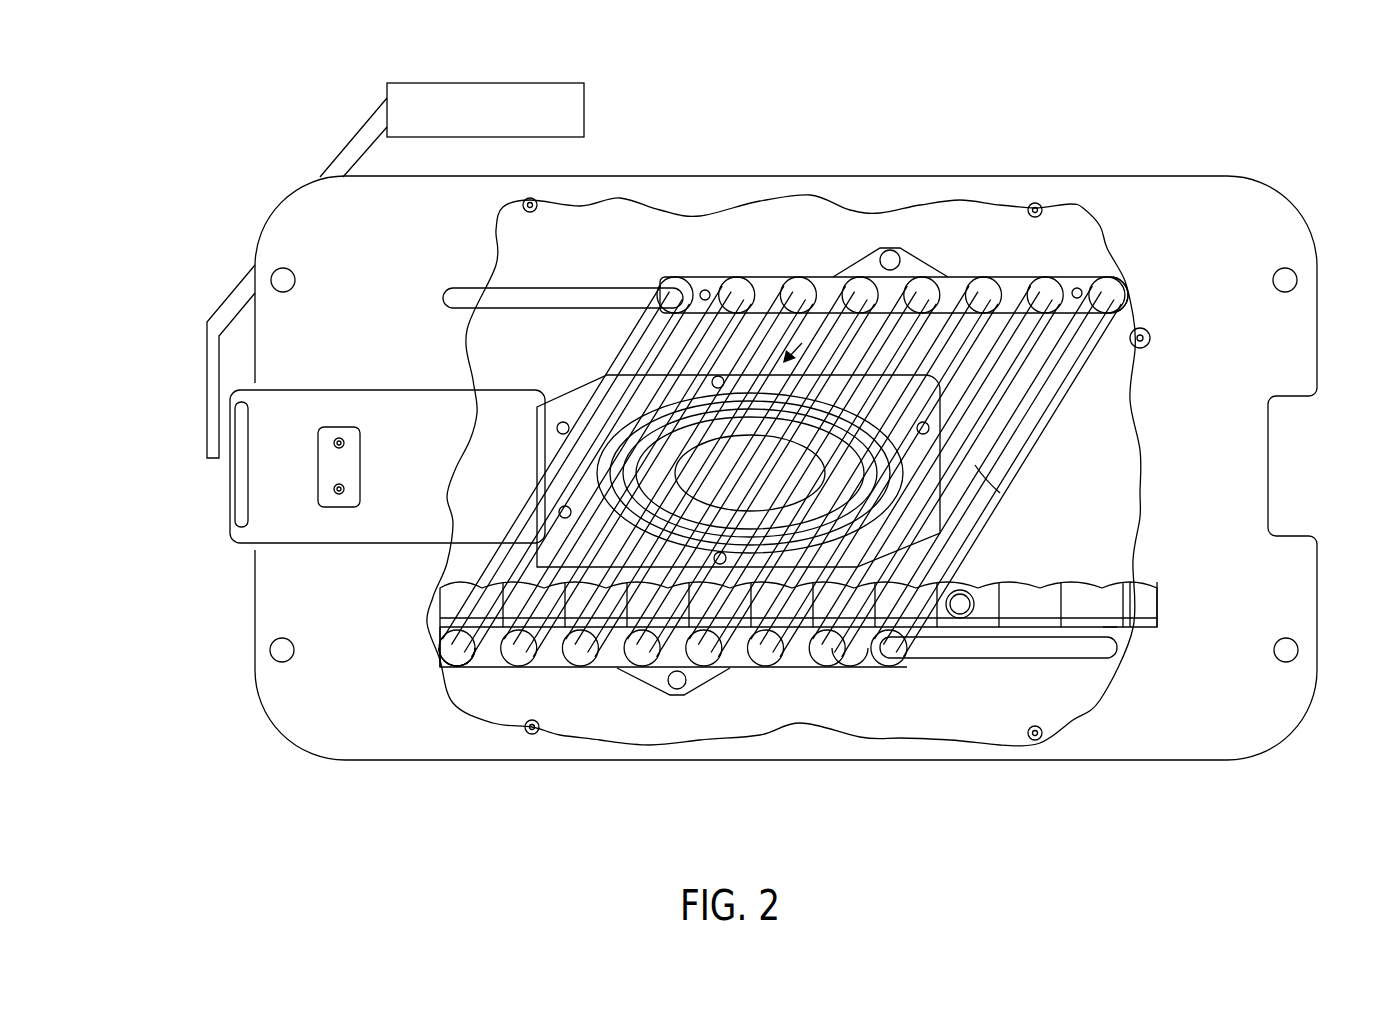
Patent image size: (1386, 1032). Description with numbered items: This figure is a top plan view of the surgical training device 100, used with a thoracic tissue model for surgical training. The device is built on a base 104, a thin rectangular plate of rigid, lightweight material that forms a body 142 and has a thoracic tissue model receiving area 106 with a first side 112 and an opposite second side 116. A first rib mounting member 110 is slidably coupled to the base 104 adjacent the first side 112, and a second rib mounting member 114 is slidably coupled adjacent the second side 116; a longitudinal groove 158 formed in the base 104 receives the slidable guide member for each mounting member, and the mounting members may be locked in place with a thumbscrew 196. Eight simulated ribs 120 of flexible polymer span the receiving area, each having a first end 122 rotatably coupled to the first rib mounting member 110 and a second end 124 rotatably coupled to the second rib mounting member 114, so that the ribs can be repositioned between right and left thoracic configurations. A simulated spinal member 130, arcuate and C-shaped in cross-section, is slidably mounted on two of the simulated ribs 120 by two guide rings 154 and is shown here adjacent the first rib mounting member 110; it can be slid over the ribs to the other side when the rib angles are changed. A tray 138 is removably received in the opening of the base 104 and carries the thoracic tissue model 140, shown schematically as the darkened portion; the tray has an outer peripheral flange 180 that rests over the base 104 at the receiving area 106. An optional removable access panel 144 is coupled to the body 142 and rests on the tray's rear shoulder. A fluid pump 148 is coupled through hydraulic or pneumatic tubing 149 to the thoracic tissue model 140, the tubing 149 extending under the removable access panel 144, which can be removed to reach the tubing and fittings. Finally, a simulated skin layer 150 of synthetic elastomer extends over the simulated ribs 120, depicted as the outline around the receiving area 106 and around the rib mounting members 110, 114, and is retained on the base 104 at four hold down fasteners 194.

The surgical training device 100 is at (968, 90).
The base 104 is at (1262, 172).
The thoracic tissue model receiving area 106 is at (1000, 493).
The first rib mounting member 110 is at (553, 650).
The first side 112 is at (1103, 632).
The second rib mounting member 114 is at (1082, 290).
The second side 116 is at (1113, 338).
The simulated ribs 120 is at (777, 317).
The first end 122 is at (447, 632).
The second end 124 is at (1113, 293).
The simulated spinal member 130 is at (1155, 620).
The tray 138 is at (833, 277).
The thoracic tissue model 140 is at (725, 670).
The body 142 is at (265, 573).
The removable access panel 144 is at (272, 420).
The fluid pump 148 is at (457, 82).
The tubing 149 is at (333, 153).
The simulated skin layer 150 is at (983, 202).
The guide rings 154 is at (457, 667).
The longitudinal groove 158 is at (575, 297).
The outer peripheral flange 180 is at (577, 402).
The hold down fasteners 194 is at (540, 196).
The thumbscrew 196 is at (900, 252).